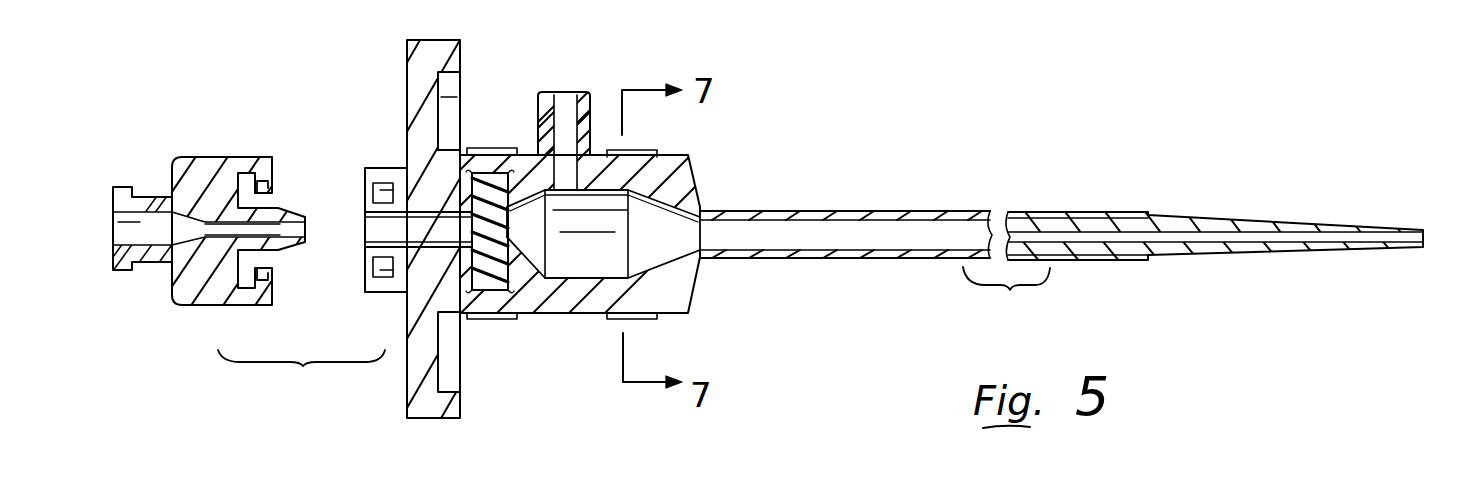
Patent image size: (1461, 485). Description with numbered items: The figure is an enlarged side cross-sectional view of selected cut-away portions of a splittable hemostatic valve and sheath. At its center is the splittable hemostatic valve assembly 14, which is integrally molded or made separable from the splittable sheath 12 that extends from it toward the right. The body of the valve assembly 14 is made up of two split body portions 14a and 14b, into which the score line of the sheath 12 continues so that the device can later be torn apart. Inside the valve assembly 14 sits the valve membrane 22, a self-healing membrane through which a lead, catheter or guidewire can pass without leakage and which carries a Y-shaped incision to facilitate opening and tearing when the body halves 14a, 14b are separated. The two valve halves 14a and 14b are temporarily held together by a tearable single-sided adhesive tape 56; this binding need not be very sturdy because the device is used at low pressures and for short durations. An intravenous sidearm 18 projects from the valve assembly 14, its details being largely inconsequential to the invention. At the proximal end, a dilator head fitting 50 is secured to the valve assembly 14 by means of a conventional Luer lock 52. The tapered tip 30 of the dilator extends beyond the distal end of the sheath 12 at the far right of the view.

The splittable sheath 12 is at (963, 211).
The splittable hemostatic valve assembly 14 is at (760, 190).
The split body portion 14a is at (690, 290).
The split body portion 14b is at (690, 185).
The intravenous sidearm 18 is at (537, 113).
The valve membrane 22 is at (488, 265).
The tapered tip 30 is at (1357, 222).
The dilator head fitting 50 is at (228, 112).
The Luer lock 52 is at (353, 180).
The tearable single-sided adhesive tape 56 is at (517, 316).